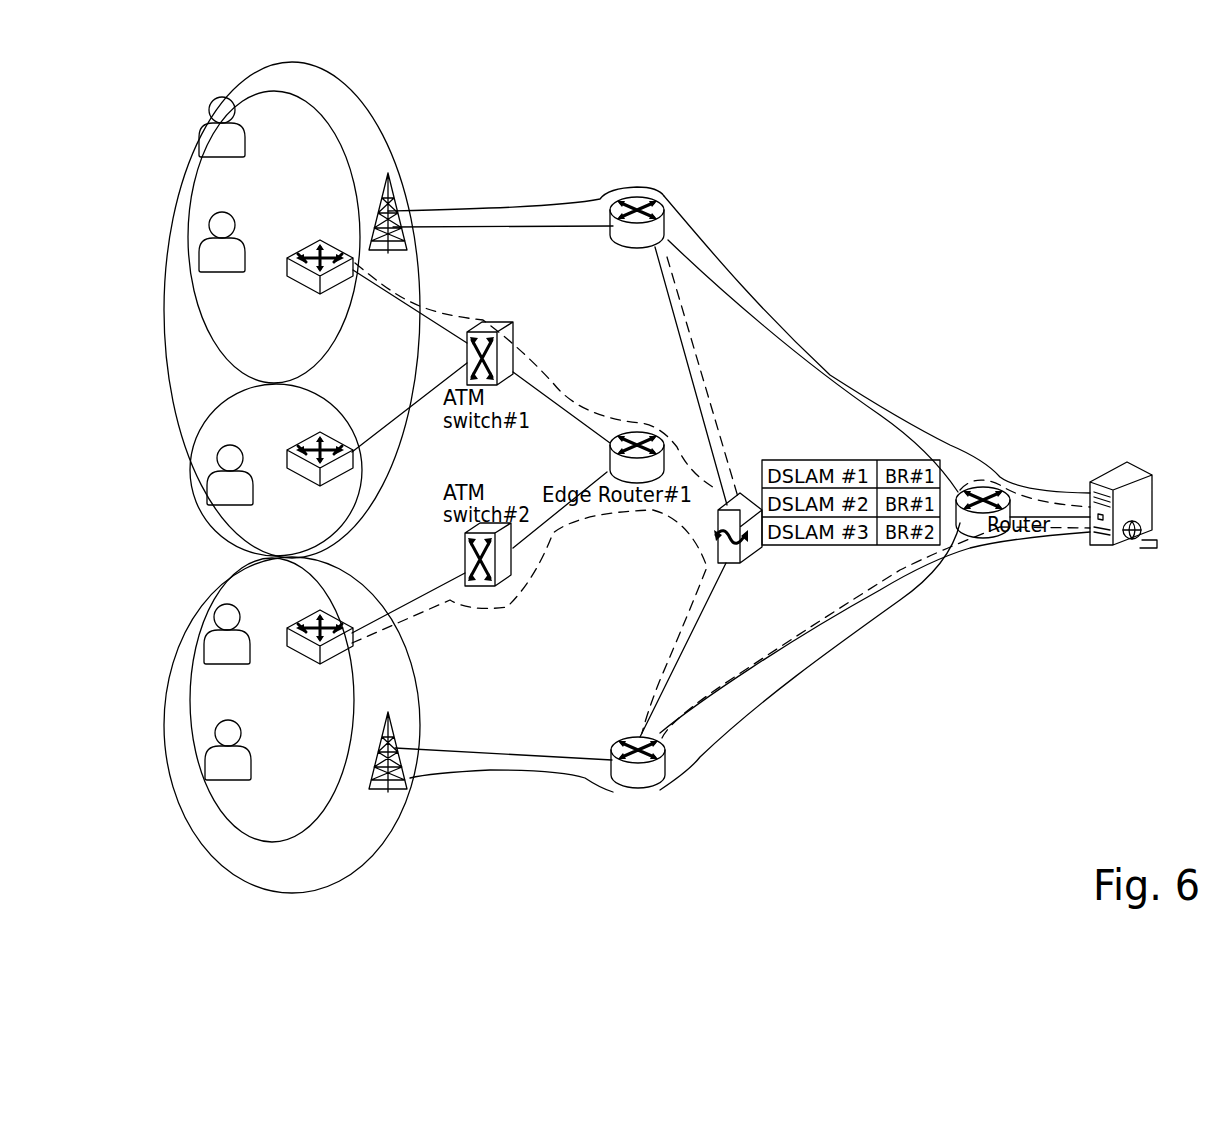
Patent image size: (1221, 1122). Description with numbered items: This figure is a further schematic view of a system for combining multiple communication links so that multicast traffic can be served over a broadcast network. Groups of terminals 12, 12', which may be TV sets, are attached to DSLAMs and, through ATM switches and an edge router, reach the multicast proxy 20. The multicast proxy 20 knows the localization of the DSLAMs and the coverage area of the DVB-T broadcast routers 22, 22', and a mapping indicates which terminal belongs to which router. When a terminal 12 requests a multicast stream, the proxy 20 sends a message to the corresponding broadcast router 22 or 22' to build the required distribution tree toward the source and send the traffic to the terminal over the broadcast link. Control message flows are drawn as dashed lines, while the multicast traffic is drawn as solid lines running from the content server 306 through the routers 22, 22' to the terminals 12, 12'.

The terminal 12 is at (292, 746).
The terminal 12' is at (292, 320).
The broadcast router 22 is at (569, 203).
The broadcast router 22' is at (690, 806).
The multicast proxy 20 is at (742, 565).
The content server 306 is at (1108, 480).